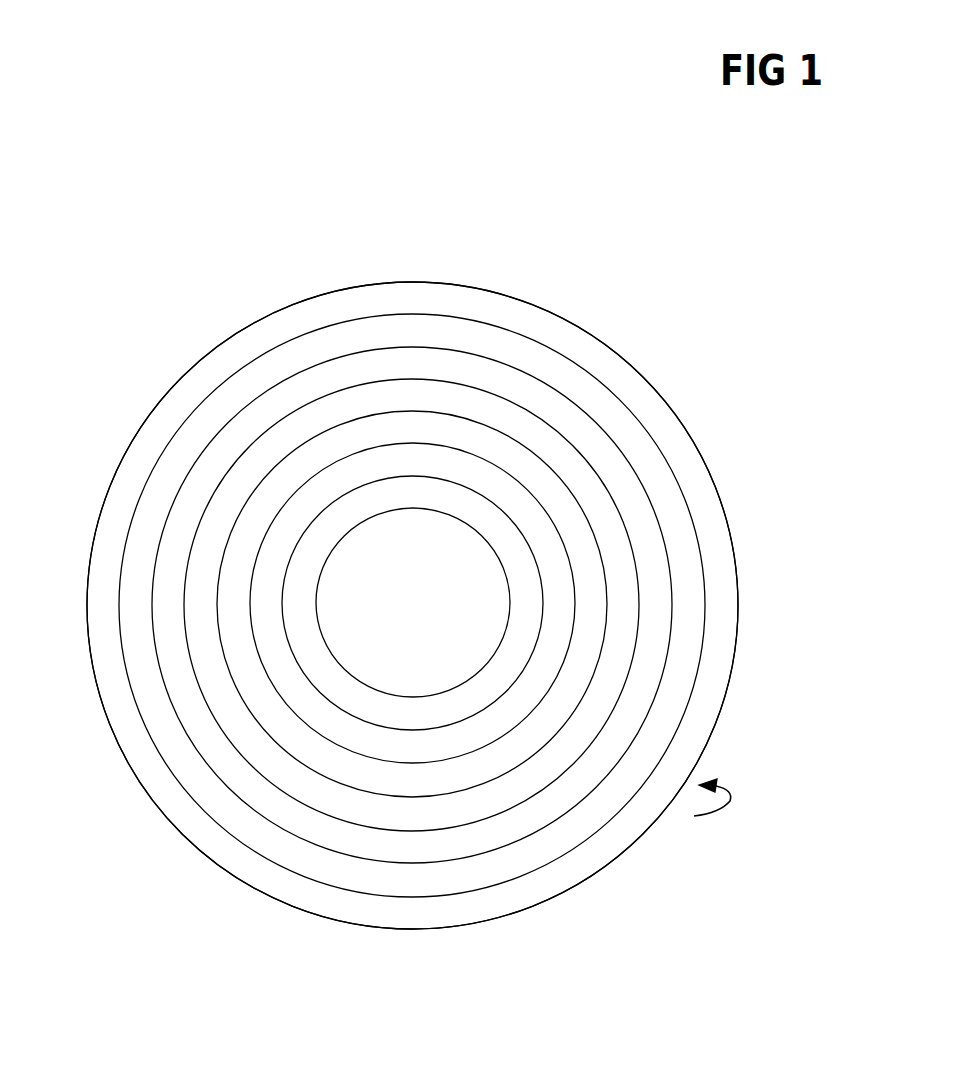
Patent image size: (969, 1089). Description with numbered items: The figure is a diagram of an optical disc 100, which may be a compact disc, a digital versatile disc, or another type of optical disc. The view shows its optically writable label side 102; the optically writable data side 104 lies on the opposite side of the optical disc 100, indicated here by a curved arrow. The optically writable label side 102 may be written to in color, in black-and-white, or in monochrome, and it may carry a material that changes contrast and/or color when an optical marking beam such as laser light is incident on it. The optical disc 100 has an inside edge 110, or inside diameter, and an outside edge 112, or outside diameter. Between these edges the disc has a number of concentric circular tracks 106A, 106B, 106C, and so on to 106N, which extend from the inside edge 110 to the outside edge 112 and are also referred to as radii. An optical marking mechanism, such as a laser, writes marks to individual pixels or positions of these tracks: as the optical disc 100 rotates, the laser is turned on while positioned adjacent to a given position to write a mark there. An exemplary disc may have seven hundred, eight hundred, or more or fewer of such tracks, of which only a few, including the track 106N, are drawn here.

The optical disc 100 is at (86, 348).
The optically writable label side 102 is at (305, 312).
The optically writable data side 104 is at (706, 811).
The concentric circular track 106A is at (439, 726).
The concentric circular track 106B is at (439, 757).
The concentric circular track 106C is at (439, 788).
The concentric circular track 106N is at (439, 886).
The inside edge 110 is at (510, 612).
The outside edge 112 is at (738, 606).